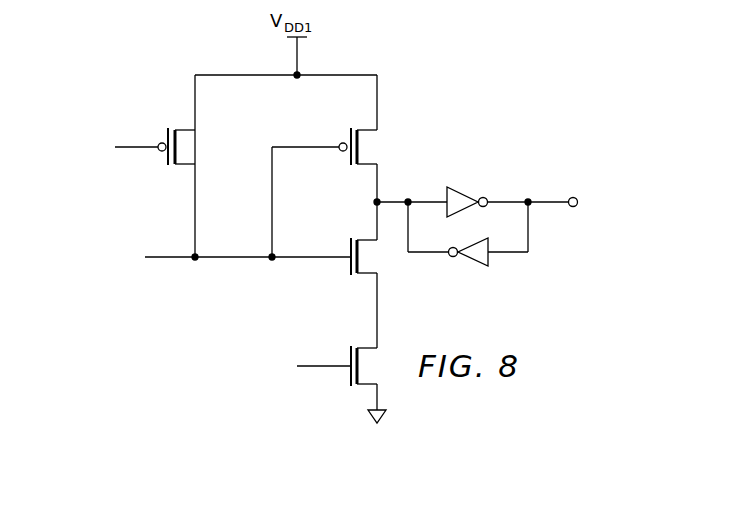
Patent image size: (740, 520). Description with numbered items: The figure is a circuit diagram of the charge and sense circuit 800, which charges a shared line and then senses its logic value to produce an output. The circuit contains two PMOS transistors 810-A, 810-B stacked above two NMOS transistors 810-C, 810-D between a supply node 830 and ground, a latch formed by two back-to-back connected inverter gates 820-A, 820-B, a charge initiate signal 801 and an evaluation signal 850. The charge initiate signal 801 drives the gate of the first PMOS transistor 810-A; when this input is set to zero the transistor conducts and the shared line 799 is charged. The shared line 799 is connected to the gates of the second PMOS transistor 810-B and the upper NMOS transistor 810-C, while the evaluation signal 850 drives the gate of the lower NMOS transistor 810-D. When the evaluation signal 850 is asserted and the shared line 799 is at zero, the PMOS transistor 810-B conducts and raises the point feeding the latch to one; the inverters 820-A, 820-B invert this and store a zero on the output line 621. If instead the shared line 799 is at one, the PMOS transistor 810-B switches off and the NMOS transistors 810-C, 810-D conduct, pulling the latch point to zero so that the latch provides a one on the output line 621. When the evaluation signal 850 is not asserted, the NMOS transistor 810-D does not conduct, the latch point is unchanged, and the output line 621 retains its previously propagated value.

The charge and sense circuit 800 is at (427, 52).
The supply voltage node VDD1 830 is at (294, 55).
The charge initiate signal 801 is at (140, 144).
The PMOS transistor 810-A is at (164, 156).
The PMOS transistor 810-B is at (349, 134).
The NMOS transistor 810-C is at (350, 265).
The NMOS transistor 810-D is at (350, 372).
The shared line 799 is at (170, 255).
The evaluation signal 850 is at (323, 363).
The inverter gate 820-A is at (480, 170).
The inverter gate 820-B is at (472, 264).
The output line 621 is at (548, 199).